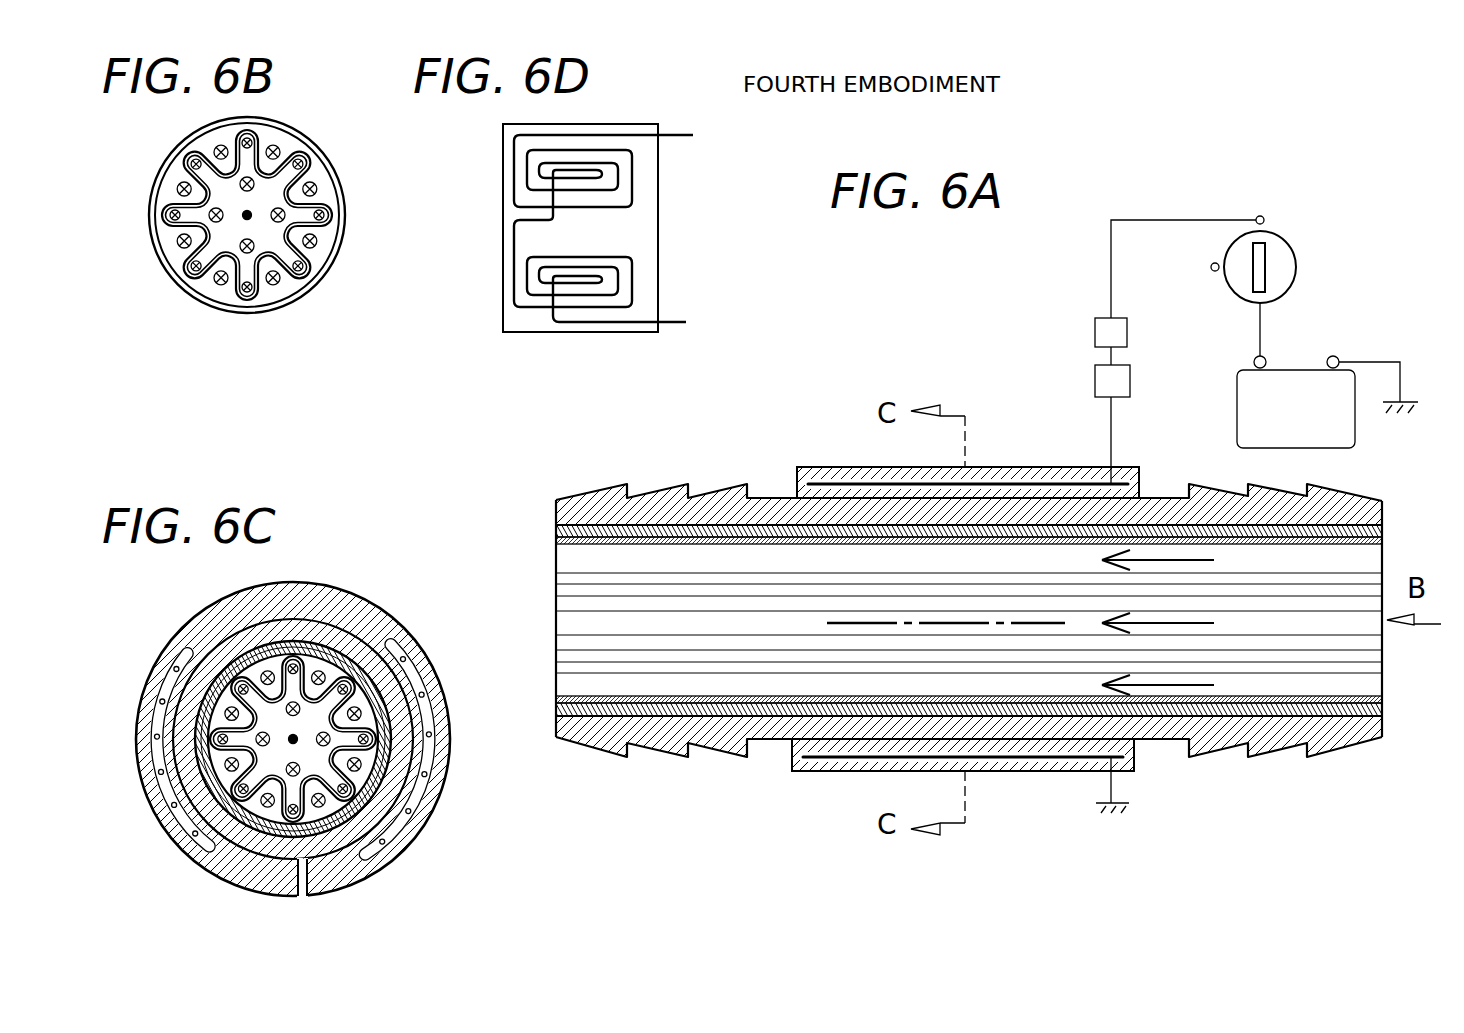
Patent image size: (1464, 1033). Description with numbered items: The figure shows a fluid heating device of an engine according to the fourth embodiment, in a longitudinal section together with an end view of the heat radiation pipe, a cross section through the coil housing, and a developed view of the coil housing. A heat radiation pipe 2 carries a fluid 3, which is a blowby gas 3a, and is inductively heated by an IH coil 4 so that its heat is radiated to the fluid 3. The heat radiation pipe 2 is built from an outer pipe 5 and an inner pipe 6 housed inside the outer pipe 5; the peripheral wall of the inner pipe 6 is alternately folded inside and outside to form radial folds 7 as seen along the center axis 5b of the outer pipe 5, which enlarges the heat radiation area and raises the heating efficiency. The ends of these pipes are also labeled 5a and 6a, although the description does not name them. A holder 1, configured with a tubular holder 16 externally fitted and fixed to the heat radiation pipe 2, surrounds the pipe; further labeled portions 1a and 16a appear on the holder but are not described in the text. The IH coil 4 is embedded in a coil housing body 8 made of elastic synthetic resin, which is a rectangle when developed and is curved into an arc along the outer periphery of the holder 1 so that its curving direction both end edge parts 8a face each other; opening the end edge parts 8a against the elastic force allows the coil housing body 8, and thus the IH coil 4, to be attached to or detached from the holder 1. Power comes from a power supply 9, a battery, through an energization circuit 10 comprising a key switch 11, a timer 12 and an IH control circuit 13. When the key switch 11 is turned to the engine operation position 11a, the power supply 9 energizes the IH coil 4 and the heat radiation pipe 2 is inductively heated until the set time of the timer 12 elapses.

In FIG. 6C, the holder 1 is at (329, 692).
In FIG. 6A, the holder 1 is at (969, 575).
In FIG. 6A, the rib of pipe 1a is at (1009, 599).
In FIG. 6B, the heat radiation pipe 2 is at (293, 215).
In FIG. 6C, the heat radiation pipe 2 is at (326, 798).
In FIG. 6A, the heat radiation pipe 2 is at (969, 551).
In FIG. 6B, the fluid 3 is at (272, 245).
In FIG. 6C, the fluid 3 is at (283, 800).
In FIG. 6A, the fluid 3 is at (1146, 685).
In FIG. 6B, the blowby gas 3a is at (265, 249).
In FIG. 6C, the blowby gas 3a is at (267, 804).
In FIG. 6A, the blowby gas 3a is at (1148, 625).
In FIG. 6D, the IH coil 4 is at (632, 176).
In FIG. 6C, the IH coil 4 is at (297, 719).
In FIG. 6A, the IH coil 4 is at (1032, 476).
In FIG. 6B, the outer pipe 5 is at (265, 215).
In FIG. 6C, the outer pipe 5 is at (304, 775).
In FIG. 6A, the outer pipe 5 is at (694, 523).
In FIG. 6A, the outer layer end 5a is at (1375, 534).
In FIG. 6B, the center axis 5b is at (317, 246).
In FIG. 6C, the center axis 5b is at (386, 787).
In FIG. 6A, the center axis 5b is at (981, 627).
In FIG. 6B, the inner pipe 6 is at (268, 215).
In FIG. 6C, the inner pipe 6 is at (310, 804).
In FIG. 6A, the inner pipe 6 is at (733, 537).
In FIG. 6A, the inner layer end 6a is at (1375, 542).
In FIG. 6B, the radial folds 7 is at (216, 215).
In FIG. 6C, the radial folds 7 is at (261, 703).
In FIG. 6A, the radial folds 7 is at (1348, 682).
In FIG. 6D, the coil housing body 8 is at (618, 123).
In FIG. 6C, the coil housing body 8 is at (293, 739).
In FIG. 6A, the coil housing body 8 is at (990, 462).
In FIG. 6C, the curving direction both end edge parts 8a is at (301, 902).
In FIG. 6A, the power supply 9 is at (1297, 388).
In FIG. 6A, the energization circuit 10 is at (1239, 236).
In FIG. 6A, the key switch 11 is at (1298, 265).
In FIG. 6A, the engine operation position 11a is at (1255, 218).
In FIG. 6A, the timer 12 is at (1121, 334).
In FIG. 6A, the IH control circuit 13 is at (1115, 381).
In FIG. 6C, the tubular holder 16 is at (307, 703).
In FIG. 6A, the tubular holder 16 is at (1166, 491).
In FIG. 6A, the pipe rib 16a is at (563, 503).